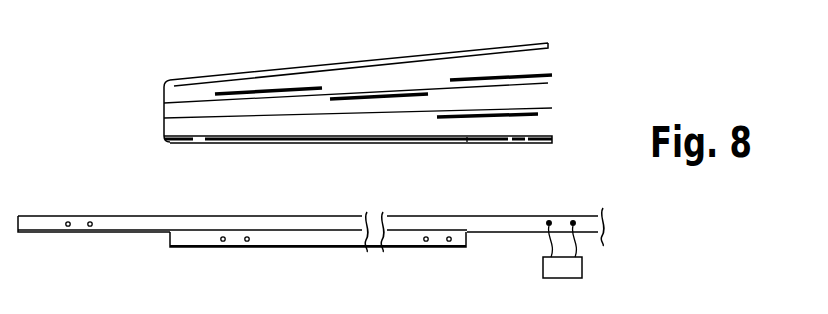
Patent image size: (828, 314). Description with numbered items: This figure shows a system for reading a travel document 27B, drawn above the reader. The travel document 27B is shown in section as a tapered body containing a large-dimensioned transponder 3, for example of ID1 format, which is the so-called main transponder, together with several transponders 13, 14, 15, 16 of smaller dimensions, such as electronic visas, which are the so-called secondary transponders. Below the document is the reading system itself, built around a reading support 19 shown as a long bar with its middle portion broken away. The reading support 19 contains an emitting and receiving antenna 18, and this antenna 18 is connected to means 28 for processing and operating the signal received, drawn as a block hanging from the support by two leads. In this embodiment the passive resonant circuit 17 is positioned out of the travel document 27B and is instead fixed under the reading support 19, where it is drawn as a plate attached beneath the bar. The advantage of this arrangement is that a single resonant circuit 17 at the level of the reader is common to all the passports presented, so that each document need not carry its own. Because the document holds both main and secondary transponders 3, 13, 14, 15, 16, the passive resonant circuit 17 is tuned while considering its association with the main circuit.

The travel document 27B is at (158, 118).
The transponder 16 is at (267, 88).
The transponder 15 is at (394, 96).
The transponder 13 is at (497, 78).
The transponder 14 is at (512, 118).
The transponder 3 is at (467, 143).
The reading support 19 is at (40, 215).
The emitting and receiving antenna 18 is at (68, 227).
The passive resonant circuit 17 is at (198, 244).
The means for processing and operating the signal 28 is at (546, 267).